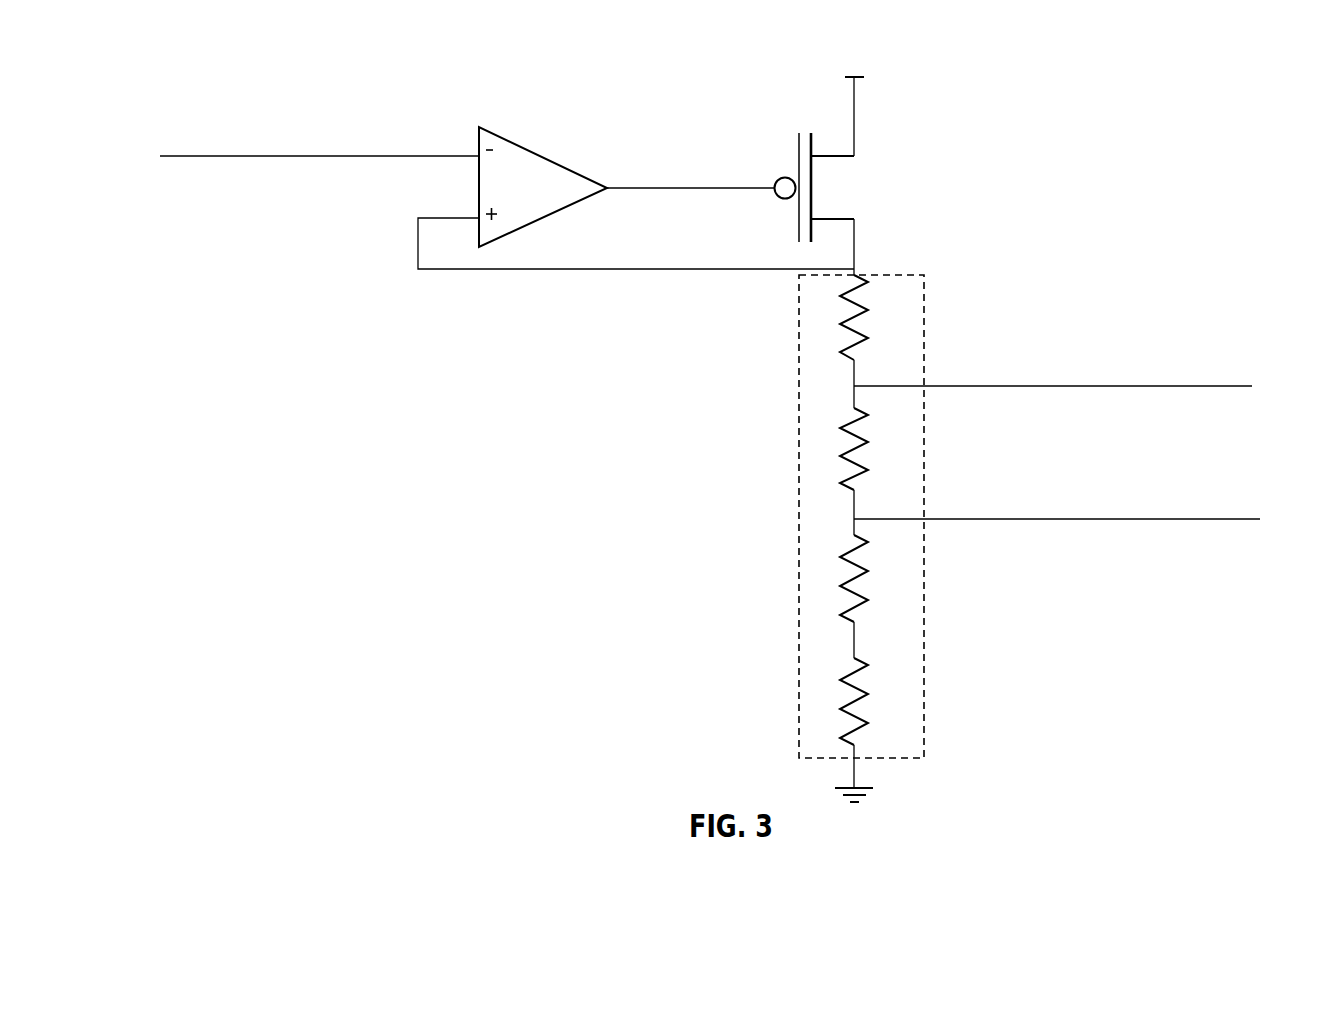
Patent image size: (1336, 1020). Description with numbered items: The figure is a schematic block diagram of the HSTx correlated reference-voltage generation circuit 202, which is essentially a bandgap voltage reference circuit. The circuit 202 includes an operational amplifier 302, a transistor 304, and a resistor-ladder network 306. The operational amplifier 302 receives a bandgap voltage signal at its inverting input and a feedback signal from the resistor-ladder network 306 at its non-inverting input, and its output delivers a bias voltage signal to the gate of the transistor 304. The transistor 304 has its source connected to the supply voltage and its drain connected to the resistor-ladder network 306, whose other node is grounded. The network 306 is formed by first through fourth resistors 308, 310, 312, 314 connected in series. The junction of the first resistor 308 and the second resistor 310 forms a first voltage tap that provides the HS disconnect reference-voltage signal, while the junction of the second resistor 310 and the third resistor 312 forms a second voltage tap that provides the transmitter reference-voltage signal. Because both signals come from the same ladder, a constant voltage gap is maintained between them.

The HSTx correlated reference-voltage generation circuit 202 is at (532, 763).
The operational amplifier 302 is at (538, 155).
The transistor 304 is at (832, 156).
The resistor-ladder network 306 is at (927, 288).
The first resistor 308 is at (862, 332).
The second resistor 310 is at (862, 465).
The third resistor 312 is at (860, 600).
The fourth resistor 314 is at (860, 717).